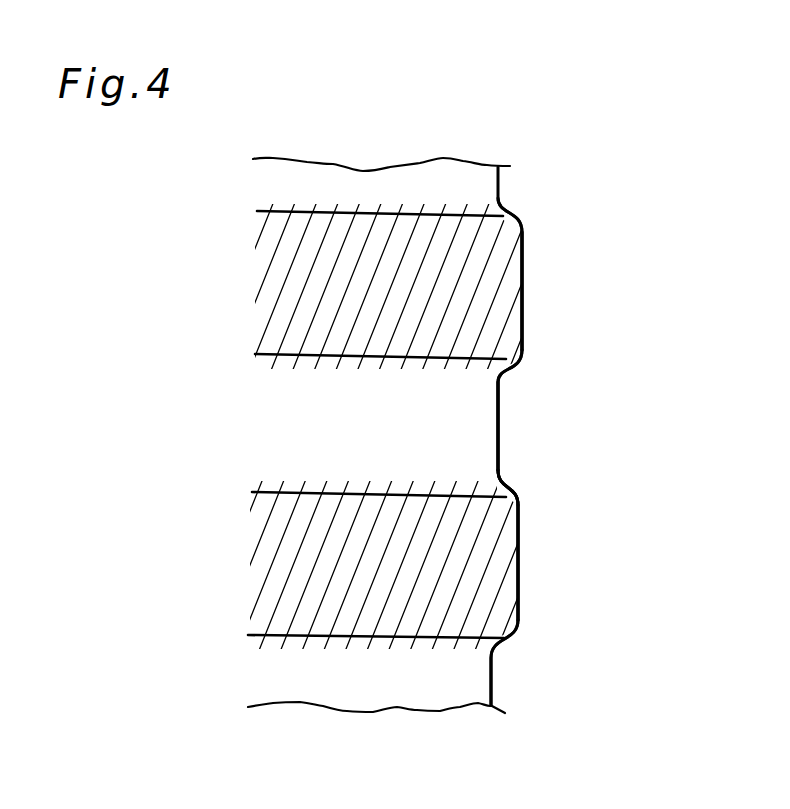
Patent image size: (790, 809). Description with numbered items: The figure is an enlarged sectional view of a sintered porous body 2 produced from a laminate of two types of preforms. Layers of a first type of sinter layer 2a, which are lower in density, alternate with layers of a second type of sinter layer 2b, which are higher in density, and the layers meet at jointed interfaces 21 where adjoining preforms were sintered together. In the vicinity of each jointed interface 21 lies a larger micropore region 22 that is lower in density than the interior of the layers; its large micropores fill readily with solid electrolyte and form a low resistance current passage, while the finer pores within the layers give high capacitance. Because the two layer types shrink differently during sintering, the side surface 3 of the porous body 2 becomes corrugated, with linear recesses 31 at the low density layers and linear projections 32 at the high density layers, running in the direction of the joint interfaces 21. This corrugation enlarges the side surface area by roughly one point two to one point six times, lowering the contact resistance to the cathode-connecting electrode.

The porous body 2 is at (665, 167).
The first type sinter layer 2a is at (505, 287).
The second type sinter layer 2b is at (453, 430).
The side surface 3 is at (562, 509).
The linear recess 31 is at (495, 450).
The linear projection 32 is at (520, 330).
The jointed interface 21 is at (355, 352).
The larger micropore region 22 is at (333, 294).